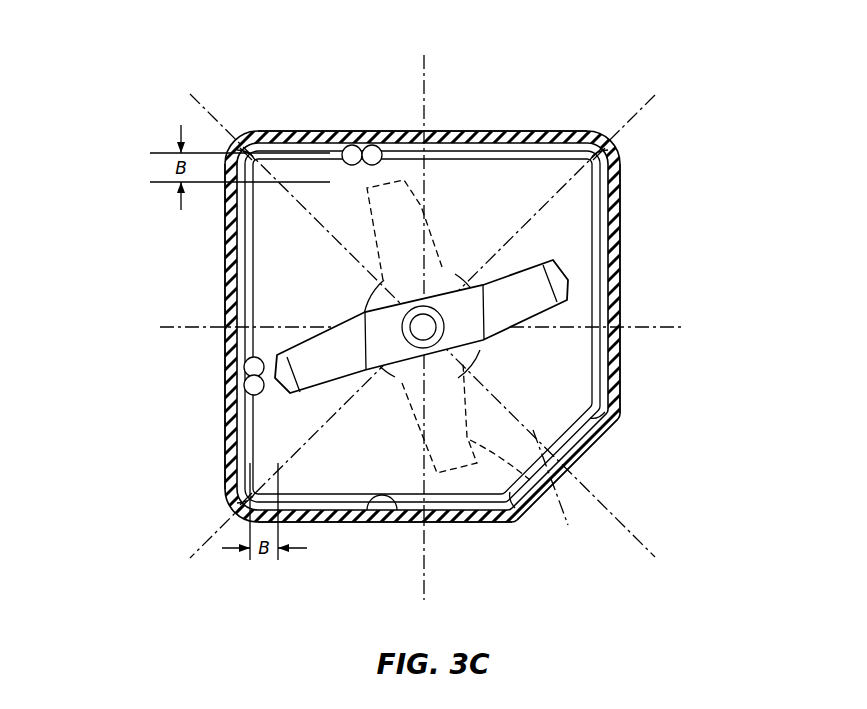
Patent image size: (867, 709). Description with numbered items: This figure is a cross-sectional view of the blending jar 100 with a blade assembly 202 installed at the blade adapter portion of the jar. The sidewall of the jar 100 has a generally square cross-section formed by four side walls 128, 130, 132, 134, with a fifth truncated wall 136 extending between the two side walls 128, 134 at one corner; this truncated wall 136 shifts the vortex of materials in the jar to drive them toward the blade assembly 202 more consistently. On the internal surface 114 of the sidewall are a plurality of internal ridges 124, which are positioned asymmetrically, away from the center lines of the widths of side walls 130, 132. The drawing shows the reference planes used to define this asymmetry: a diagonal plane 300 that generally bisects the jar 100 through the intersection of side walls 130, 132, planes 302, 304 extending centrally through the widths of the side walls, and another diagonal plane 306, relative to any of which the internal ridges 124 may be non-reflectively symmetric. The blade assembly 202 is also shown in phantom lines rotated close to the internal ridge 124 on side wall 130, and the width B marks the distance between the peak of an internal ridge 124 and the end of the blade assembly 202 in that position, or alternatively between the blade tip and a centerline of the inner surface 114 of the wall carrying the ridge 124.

The blending jar 100 is at (136, 103).
The internal surface of the sidewall 114 is at (403, 527).
The internal ridges 124 is at (355, 162).
The side wall 128 is at (615, 287).
The side wall 130 is at (463, 131).
The side wall 132 is at (227, 443).
The side wall 134 is at (375, 523).
The fifth truncated wall 136 is at (588, 472).
The blade assembly 202 is at (500, 333).
The diagonal plane 300 is at (630, 535).
The plane 302 is at (662, 328).
The plane 304 is at (425, 568).
The another diagonal plane 306 is at (215, 533).